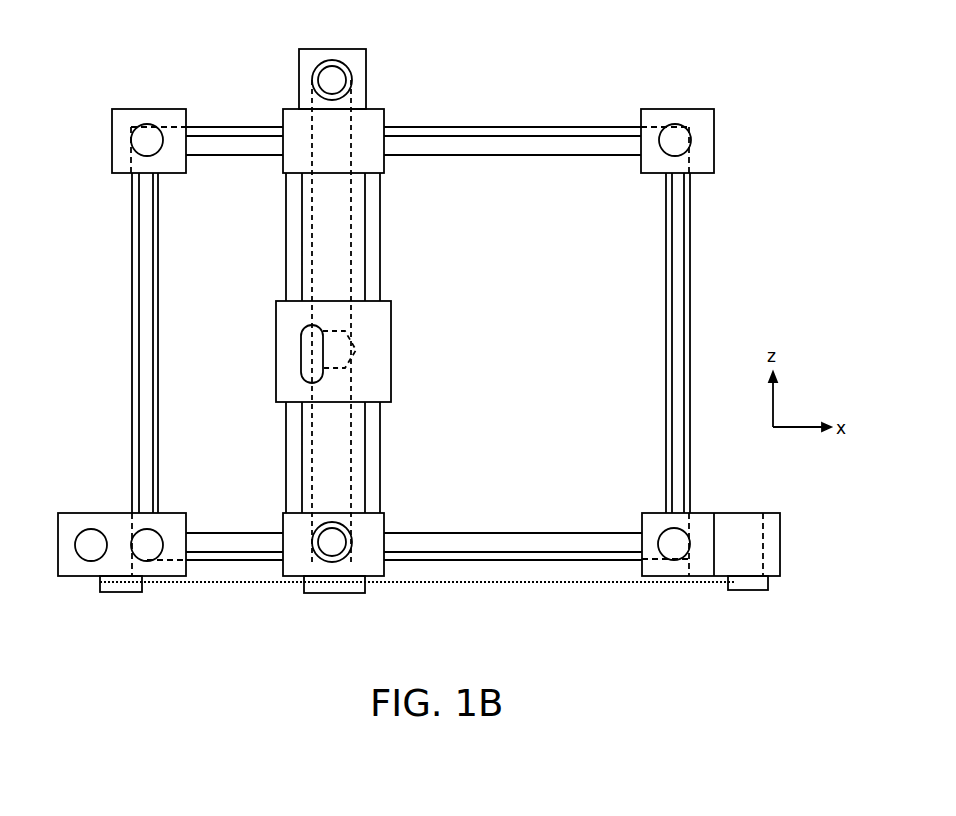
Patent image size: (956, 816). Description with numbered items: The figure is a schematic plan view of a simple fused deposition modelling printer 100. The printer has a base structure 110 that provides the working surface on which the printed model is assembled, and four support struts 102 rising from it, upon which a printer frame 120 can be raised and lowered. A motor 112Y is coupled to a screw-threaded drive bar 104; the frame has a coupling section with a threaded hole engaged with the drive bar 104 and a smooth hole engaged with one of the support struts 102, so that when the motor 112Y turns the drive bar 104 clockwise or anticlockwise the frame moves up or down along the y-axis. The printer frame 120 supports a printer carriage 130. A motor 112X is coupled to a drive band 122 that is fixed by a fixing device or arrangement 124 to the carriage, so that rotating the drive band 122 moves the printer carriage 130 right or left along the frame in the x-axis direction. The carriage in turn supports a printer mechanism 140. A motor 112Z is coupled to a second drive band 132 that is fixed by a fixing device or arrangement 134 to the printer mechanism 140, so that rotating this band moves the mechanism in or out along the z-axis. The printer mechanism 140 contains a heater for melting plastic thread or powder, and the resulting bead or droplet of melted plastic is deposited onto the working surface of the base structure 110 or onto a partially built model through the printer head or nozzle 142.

The FDM 3D printer 100 is at (585, 63).
The support struts 102 is at (152, 153).
The drive bar 104 is at (91, 530).
The base structure 110 is at (596, 335).
The motor 112X is at (728, 527).
The motor 112Y is at (73, 558).
The motor 112Z is at (340, 58).
The printer frame 120 is at (522, 158).
The drive band 122 is at (520, 584).
The fixing device or arrangement 124 is at (345, 594).
The printer carriage 130 is at (381, 174).
The drive band 132 is at (304, 253).
The fixing device or arrangement 134 is at (300, 365).
The printer mechanism 140 is at (391, 325).
The printer head or nozzle 142 is at (343, 353).